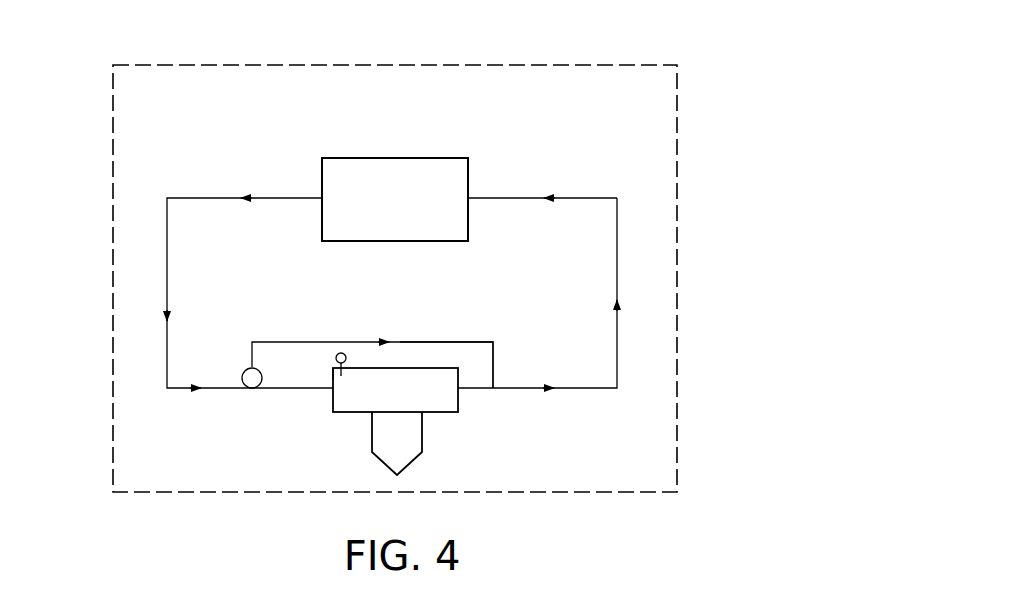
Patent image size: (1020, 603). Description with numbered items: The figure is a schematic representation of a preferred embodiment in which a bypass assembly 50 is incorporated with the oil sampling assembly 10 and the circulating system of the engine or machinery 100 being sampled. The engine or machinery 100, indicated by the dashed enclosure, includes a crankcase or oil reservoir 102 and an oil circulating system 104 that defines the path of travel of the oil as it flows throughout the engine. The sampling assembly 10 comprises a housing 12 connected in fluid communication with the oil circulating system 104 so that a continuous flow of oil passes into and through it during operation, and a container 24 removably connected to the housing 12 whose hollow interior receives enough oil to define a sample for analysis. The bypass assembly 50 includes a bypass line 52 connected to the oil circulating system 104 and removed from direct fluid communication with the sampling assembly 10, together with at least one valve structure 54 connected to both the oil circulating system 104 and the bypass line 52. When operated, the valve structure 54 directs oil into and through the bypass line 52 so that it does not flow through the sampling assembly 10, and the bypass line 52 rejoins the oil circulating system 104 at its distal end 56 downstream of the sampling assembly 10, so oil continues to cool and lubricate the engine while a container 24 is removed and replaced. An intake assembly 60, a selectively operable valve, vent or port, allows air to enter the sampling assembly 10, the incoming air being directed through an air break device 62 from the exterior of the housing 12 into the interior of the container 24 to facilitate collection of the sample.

The sampling assembly 10 is at (404, 453).
The housing 12 is at (458, 402).
The container 24 is at (423, 436).
The bypass assembly 50 is at (310, 336).
The bypass line 52 is at (458, 340).
The valve structure 54 is at (243, 368).
The distal end of bypass line 56 is at (494, 385).
The intake assembly 60 is at (326, 367).
The air break device 62 is at (345, 354).
The engine or machinery 100 is at (684, 88).
The oil reservoir 102 is at (468, 170).
The oil circulating system 104 is at (165, 258).